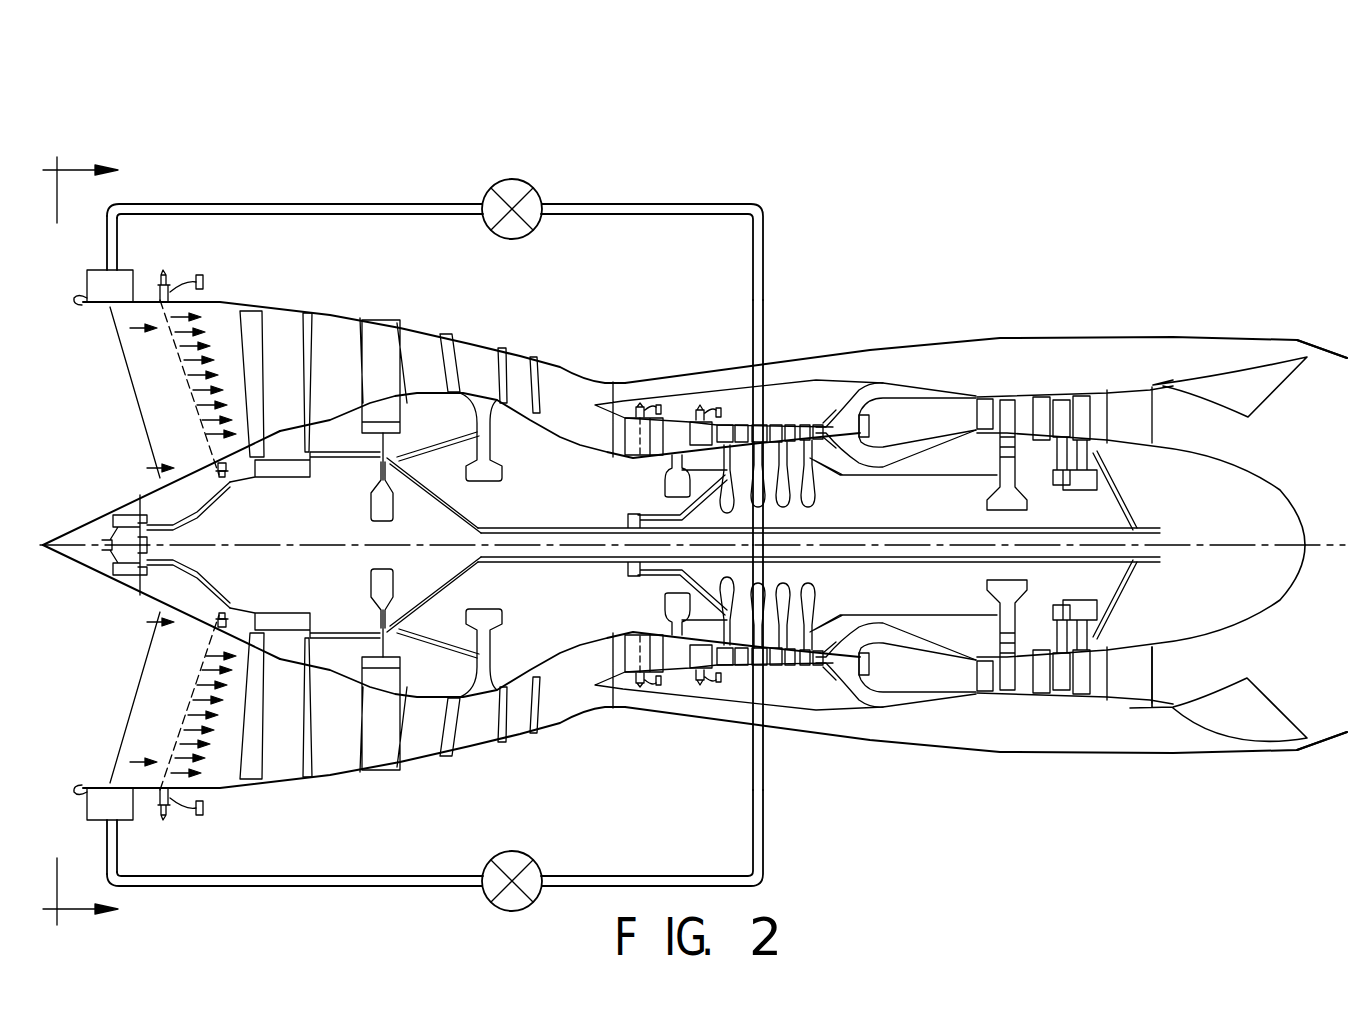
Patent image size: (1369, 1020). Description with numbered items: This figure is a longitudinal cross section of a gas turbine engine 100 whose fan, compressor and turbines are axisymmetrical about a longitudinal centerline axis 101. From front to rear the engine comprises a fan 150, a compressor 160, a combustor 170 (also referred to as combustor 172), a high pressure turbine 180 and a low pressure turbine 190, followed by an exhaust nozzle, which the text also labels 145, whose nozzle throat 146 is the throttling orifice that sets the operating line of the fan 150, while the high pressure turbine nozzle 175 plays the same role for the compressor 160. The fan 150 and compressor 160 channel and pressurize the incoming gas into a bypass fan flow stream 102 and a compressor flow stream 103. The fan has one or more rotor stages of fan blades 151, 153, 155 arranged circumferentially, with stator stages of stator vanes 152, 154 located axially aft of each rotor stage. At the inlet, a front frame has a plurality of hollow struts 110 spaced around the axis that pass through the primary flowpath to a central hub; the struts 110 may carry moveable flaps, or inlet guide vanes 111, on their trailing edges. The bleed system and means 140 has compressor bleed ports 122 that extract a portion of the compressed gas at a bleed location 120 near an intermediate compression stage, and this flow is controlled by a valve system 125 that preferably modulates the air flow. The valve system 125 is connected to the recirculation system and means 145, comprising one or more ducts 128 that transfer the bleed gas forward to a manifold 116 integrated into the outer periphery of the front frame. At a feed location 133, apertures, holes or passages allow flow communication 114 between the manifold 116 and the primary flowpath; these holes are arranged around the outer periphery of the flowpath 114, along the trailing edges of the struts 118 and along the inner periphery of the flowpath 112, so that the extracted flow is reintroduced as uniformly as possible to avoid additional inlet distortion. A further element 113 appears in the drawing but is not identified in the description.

The gas turbine engine 100 is at (180, 97).
The longitudinal centerline axis 101 is at (355, 548).
The bypass fan flow stream 102 is at (651, 381).
The compressor flow stream 103 is at (617, 432).
The struts 110 is at (140, 405).
The inlet guide vanes 111 is at (210, 315).
The inner periphery of the flowpath 112 is at (130, 495).
The shaft casing 113 is at (200, 477).
The flow communication 114 is at (110, 307).
The manifold 116 is at (128, 270).
The trailing edges of the struts 118 is at (177, 357).
The bleed location 120 is at (765, 420).
The compressor bleed ports 122 is at (685, 204).
The valve system 125 is at (517, 180).
The ducts 128 is at (303, 204).
The feed location 133 is at (153, 435).
The bleed system and means 140 is at (768, 258).
The recirculation system and means 145 is at (200, 195).
The nozzle throat 146 is at (1325, 394).
The fan 150 is at (278, 480).
The fan blades 151 is at (272, 325).
The stator vanes 152 is at (330, 325).
The fan blades 153 is at (382, 330).
The stator vanes 154 is at (432, 338).
The fan blades 155 is at (478, 348).
The compressor 160 is at (658, 468).
The combustor 170 is at (883, 383).
The combustor 172 is at (916, 405).
The high pressure turbine nozzle 175 is at (987, 400).
The high pressure turbine 180 is at (1007, 400).
The low pressure turbine 190 is at (1081, 376).